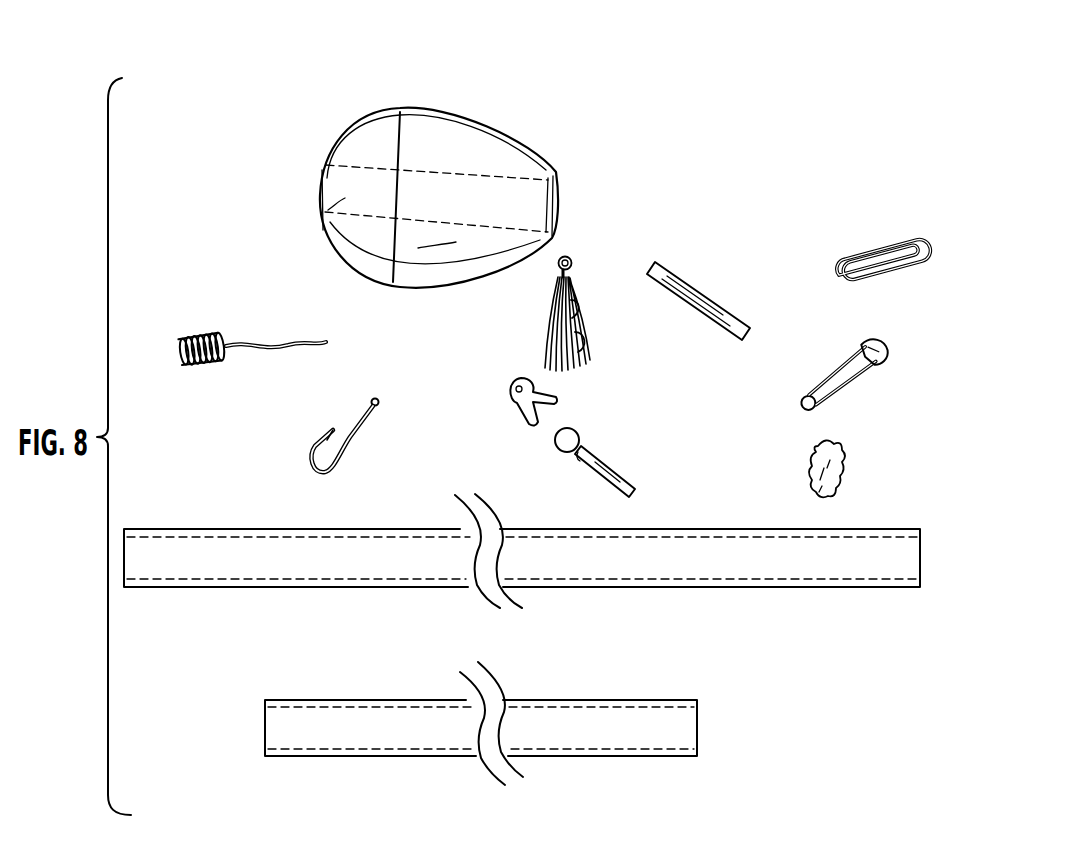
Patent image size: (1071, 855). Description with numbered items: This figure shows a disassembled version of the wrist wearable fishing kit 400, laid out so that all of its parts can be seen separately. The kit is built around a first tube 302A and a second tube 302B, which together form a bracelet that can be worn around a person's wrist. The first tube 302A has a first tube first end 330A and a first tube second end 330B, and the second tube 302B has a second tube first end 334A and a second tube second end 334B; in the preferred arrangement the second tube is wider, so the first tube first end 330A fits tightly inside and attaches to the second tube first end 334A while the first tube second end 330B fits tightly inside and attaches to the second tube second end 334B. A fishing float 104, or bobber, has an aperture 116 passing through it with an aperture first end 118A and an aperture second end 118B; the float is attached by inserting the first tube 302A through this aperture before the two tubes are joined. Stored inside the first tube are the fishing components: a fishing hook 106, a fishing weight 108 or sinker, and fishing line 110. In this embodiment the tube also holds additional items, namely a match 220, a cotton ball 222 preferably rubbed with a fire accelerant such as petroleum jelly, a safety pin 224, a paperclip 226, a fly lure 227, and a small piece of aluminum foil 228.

The wrist wearable fishing kit 400 is at (788, 92).
The fishing float 104 is at (481, 145).
The aperture 116 is at (425, 195).
The aperture first end 118A is at (322, 173).
The aperture second end 118B is at (556, 206).
The fishing line 110 is at (206, 333).
The fishing hook 106 is at (366, 412).
The fishing weight 108 is at (511, 376).
The fly lure 227 is at (579, 303).
The small piece of aluminum foil 228 is at (690, 284).
The paperclip 226 is at (887, 240).
The safety pin 224 is at (834, 369).
The match 220 is at (580, 441).
The cotton ball 222 is at (814, 466).
The first tube 302A is at (201, 529).
The second tube 302B is at (341, 701).
The first tube first end 330A is at (124, 548).
The first tube second end 330B is at (921, 551).
The second tube first end 334A is at (265, 727).
The second tube second end 334B is at (698, 727).